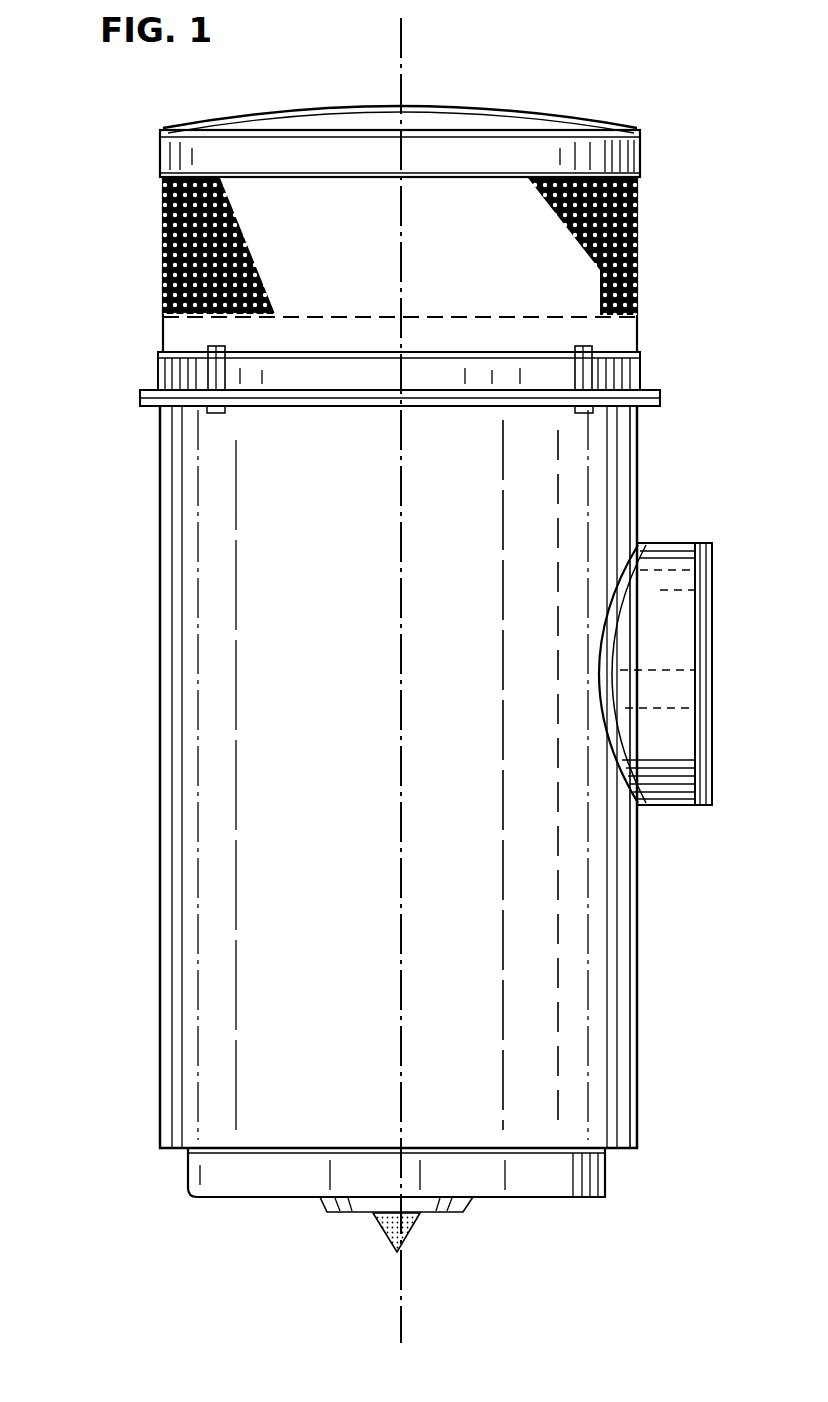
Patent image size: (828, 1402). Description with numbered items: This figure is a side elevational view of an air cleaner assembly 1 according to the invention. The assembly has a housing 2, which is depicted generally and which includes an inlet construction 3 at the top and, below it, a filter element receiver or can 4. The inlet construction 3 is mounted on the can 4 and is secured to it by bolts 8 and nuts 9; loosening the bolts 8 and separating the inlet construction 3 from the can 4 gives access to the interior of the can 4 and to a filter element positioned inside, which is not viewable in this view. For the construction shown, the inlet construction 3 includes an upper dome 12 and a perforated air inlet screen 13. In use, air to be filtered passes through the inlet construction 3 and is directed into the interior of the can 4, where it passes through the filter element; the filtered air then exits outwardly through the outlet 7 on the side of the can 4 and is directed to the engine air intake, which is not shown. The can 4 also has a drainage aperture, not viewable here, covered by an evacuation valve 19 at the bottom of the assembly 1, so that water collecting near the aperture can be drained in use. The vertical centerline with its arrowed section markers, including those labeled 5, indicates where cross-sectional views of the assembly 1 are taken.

The air cleaner assembly 1 is at (120, 612).
The housing 2 is at (158, 850).
The inlet construction 3 is at (140, 226).
The filter element receiver or can 4 is at (161, 482).
The section line 5- 5 is at (386, 1067).
The outlet 7 is at (680, 543).
The bolts 8 is at (218, 414).
The nuts 9 is at (160, 356).
The upper dome 12 is at (241, 118).
The perforated air inlet screen 13 is at (637, 280).
The evacuation valve 19 is at (405, 1238).